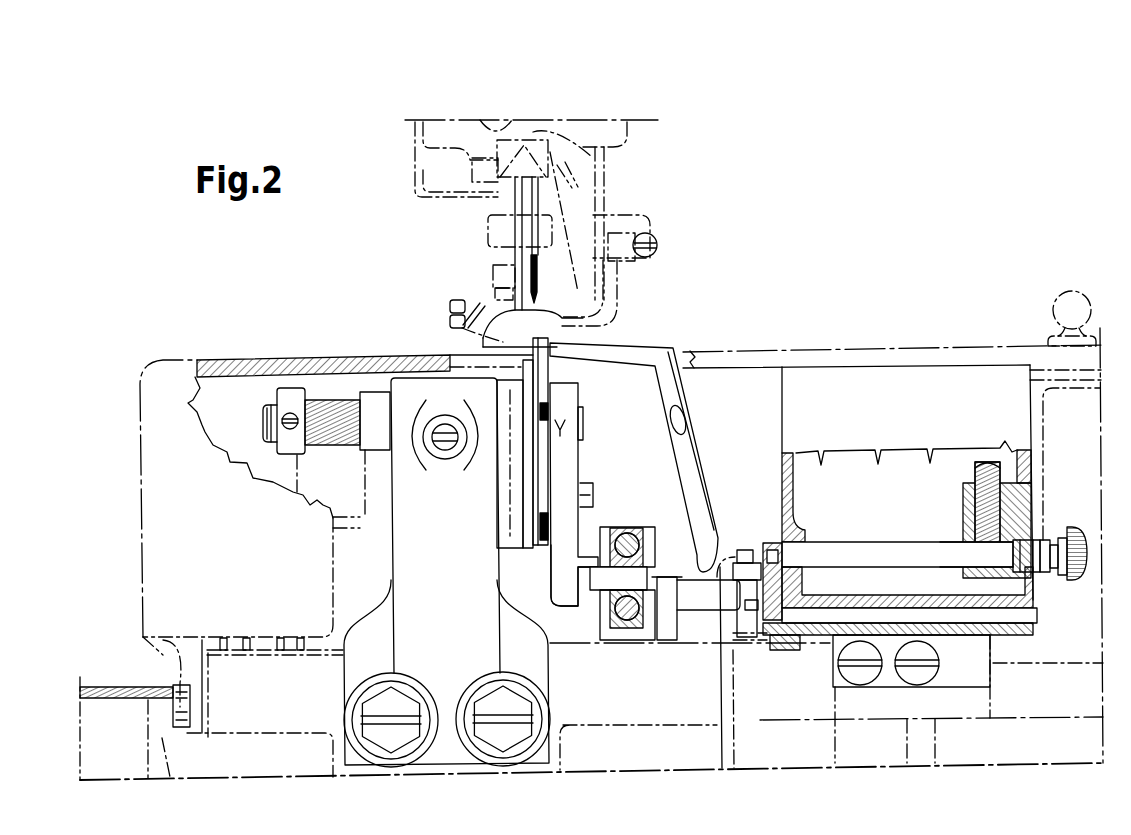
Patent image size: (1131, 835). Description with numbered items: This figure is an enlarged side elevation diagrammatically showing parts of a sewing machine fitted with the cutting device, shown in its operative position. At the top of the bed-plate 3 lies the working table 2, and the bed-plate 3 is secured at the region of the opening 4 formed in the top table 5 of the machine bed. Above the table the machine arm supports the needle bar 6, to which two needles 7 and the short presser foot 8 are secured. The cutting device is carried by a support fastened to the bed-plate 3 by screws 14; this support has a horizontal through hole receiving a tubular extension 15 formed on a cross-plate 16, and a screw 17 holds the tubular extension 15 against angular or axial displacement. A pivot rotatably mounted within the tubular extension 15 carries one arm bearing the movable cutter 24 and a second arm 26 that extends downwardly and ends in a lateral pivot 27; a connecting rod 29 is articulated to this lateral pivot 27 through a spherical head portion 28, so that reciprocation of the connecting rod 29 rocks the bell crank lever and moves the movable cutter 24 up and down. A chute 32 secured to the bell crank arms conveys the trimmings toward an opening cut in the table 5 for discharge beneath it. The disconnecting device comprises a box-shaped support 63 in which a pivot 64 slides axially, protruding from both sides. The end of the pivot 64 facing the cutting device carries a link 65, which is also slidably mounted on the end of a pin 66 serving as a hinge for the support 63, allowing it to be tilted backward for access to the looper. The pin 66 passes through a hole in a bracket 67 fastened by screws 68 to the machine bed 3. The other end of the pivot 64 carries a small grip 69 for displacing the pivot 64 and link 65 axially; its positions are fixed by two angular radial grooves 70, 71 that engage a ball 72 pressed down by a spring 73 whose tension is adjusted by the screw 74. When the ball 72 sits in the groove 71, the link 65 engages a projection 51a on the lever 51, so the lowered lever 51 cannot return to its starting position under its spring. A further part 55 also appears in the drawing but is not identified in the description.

The working table 2 is at (262, 355).
The bed-plate 3 is at (283, 712).
The opening 4 is at (160, 700).
The top table 5 is at (100, 708).
The needle bar 6 is at (606, 160).
The needles 7 is at (508, 283).
The short presser foot 8 is at (477, 345).
The screws 14 is at (490, 703).
The tubular extension 15 is at (360, 444).
The cross-plate 16 is at (508, 497).
The screw 17 is at (440, 450).
The movable cutter 24 is at (557, 343).
The arm 26 is at (566, 470).
The lateral pivot 27 is at (595, 590).
The spherical head portion 28 is at (630, 570).
The connecting rod 29 is at (627, 527).
The chute 32 is at (678, 378).
The lever 51 is at (748, 550).
The projection 51a is at (753, 610).
The rod 55 is at (728, 688).
The support 63 is at (912, 373).
The pivot 64 is at (862, 545).
The link 65 is at (776, 612).
The pin 66 is at (877, 618).
The bracket 67 is at (953, 622).
The screws 68 is at (917, 673).
The small grip 69 is at (1077, 527).
The angular radial groove 70 is at (947, 545).
The angular radial groove 71 is at (1020, 552).
The ball 72 is at (1032, 540).
The spring 73 is at (963, 505).
The screw 74 is at (990, 460).